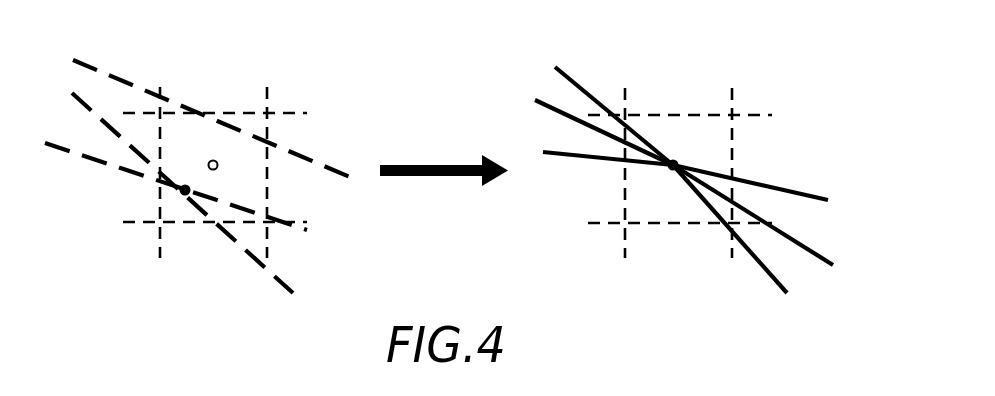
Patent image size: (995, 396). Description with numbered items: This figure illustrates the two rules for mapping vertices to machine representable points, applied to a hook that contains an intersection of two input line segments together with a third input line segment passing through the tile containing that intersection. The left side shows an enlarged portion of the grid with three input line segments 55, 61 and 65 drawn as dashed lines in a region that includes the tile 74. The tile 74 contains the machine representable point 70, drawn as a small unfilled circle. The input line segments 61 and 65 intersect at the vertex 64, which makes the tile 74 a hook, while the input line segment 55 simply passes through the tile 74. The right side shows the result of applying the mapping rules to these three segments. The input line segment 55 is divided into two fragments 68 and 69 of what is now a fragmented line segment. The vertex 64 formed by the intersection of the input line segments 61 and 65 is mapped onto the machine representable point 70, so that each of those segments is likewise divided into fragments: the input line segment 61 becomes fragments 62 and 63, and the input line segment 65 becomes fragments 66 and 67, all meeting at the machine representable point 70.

The input line segment 55 is at (118, 75).
The input line segment 61 is at (100, 165).
The input line segment 65 is at (243, 245).
The vertex 64 is at (180, 193).
The machine representable point 70 is at (214, 160).
The tile 74 is at (238, 183).
The fragment 66 is at (548, 102).
The fragment 68 is at (588, 87).
The fragment 62 is at (575, 160).
The fragment 69 is at (790, 187).
The fragment 63 is at (820, 250).
The fragment 67 is at (770, 277).